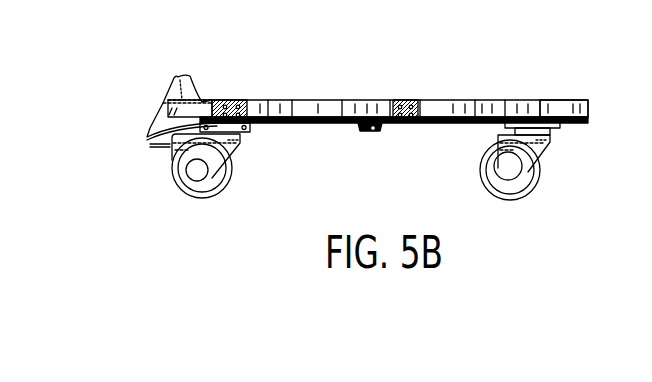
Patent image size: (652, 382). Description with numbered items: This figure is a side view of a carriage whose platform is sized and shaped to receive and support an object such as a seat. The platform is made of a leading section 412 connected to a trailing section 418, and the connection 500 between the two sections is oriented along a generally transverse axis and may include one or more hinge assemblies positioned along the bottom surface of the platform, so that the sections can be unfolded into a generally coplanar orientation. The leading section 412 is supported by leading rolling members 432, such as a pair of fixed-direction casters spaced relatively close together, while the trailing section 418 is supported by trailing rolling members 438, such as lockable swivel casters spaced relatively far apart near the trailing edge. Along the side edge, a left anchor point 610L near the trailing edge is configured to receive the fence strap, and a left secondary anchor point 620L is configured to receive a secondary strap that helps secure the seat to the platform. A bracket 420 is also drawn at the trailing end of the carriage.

The trailing section 418 is at (312, 110).
The leading section 412 is at (555, 112).
The left anchor point 610L is at (228, 100).
The left secondary anchor point 620L is at (403, 100).
The end bracket 420 is at (180, 88).
The connection 500 is at (378, 140).
The trailing rolling members 438 is at (168, 207).
The leading rolling members 432 is at (548, 204).